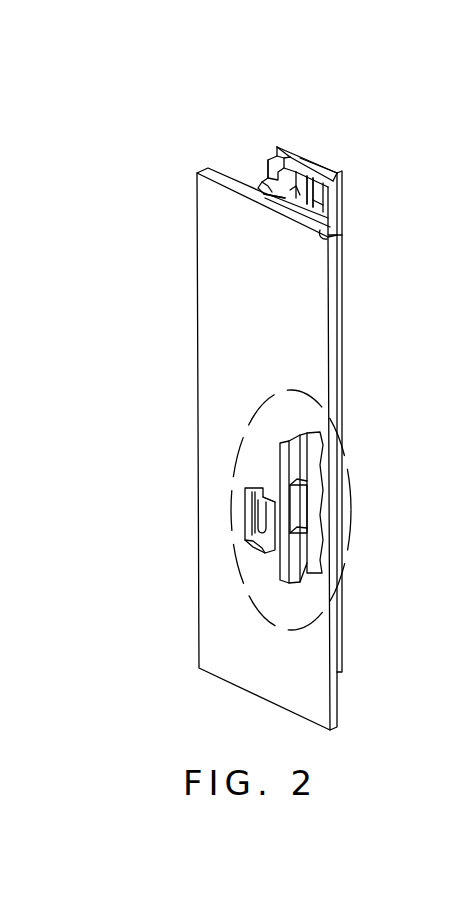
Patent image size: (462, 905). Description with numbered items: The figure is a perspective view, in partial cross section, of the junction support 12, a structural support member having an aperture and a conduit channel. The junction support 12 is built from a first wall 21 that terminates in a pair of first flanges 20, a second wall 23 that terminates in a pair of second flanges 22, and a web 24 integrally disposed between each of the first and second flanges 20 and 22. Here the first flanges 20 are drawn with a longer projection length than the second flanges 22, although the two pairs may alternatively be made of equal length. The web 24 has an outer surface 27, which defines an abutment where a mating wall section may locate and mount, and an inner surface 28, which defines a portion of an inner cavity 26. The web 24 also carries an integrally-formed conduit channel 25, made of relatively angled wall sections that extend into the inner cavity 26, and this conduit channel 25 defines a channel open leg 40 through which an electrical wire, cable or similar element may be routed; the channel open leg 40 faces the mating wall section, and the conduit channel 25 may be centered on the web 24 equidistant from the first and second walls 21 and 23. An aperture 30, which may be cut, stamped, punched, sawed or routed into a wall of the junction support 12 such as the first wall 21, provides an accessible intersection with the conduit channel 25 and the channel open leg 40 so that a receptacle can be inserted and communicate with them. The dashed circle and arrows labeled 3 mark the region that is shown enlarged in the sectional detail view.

The junction support 12 is at (146, 288).
The first flanges 20 is at (222, 180).
The first wall 21 is at (266, 327).
The second flanges 22 is at (277, 147).
The second wall 23 is at (331, 173).
The web 24 is at (257, 187).
The conduit channel 25 is at (267, 150).
The inner cavity 26 is at (298, 186).
The outer surface 27 is at (316, 192).
The inner surface 28 is at (285, 189).
The aperture 30 is at (262, 570).
The channel open leg 40 is at (304, 558).
The section view indicator (FIG. 3) 3 is at (330, 400).